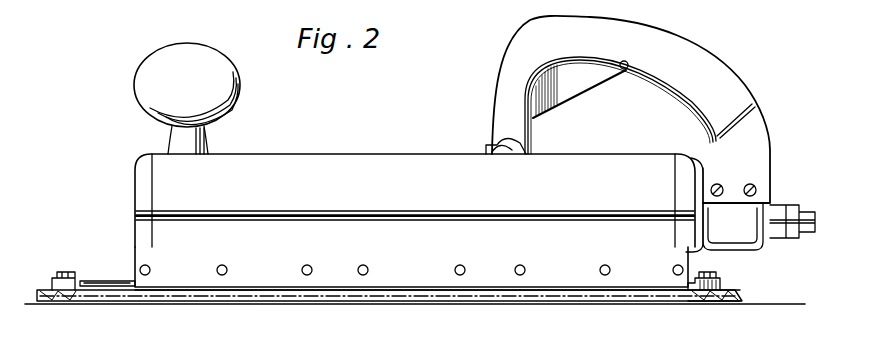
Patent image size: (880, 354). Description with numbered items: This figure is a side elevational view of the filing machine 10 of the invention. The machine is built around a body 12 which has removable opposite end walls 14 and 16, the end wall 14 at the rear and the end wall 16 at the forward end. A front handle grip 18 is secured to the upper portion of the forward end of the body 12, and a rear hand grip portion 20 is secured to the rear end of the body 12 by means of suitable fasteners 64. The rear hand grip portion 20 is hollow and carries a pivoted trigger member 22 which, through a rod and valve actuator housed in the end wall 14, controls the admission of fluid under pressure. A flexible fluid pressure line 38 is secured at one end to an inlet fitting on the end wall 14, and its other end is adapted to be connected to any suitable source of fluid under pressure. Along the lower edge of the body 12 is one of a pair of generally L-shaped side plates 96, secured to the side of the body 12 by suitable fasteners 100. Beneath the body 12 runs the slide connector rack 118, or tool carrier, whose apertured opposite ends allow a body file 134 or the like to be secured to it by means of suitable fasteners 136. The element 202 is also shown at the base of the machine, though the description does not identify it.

The filing machine 10 is at (259, 153).
The body 12 is at (329, 166).
The end wall 14 is at (683, 166).
The end wall 16 is at (141, 178).
The front handle grip 18 is at (238, 93).
The rear hand grip portion 20 is at (698, 67).
The trigger member 22 is at (580, 93).
The flexible fluid pressure line 38 is at (814, 212).
The fasteners 64 is at (500, 145).
The side plate 96 is at (278, 289).
The fasteners 100 is at (529, 266).
The slide connector rack 118 is at (92, 281).
The body file 134 is at (739, 302).
The fasteners 136 is at (65, 272).
The base pad 202 is at (345, 273).